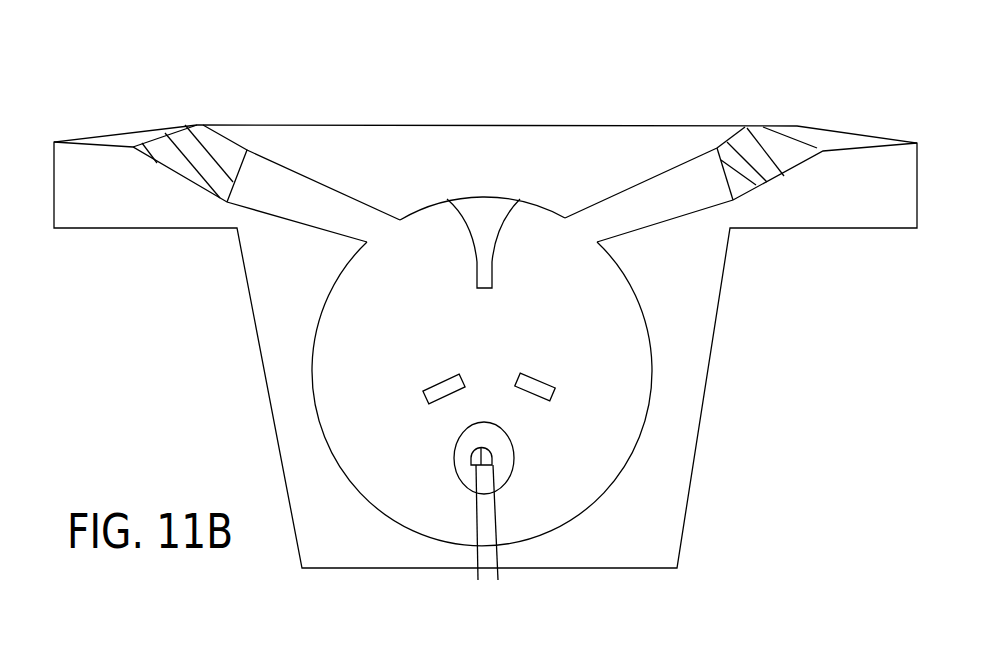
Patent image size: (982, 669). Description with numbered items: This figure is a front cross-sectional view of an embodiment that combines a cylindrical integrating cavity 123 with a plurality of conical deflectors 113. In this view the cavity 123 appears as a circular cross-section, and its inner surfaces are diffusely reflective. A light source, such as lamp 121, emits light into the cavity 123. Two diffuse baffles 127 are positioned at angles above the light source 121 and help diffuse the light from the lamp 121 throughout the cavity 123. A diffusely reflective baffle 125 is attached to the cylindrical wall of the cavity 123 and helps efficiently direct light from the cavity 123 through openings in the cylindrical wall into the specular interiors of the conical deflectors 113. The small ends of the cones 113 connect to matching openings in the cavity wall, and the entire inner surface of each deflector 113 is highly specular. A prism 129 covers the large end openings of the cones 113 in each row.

The conical deflector 113 is at (265, 213).
The lamp 121 is at (525, 472).
The cylindrical integrating cavity 123 is at (637, 447).
The diffusely reflective baffle 125 is at (495, 197).
The diffuse baffle 127 is at (557, 388).
The prism 129 is at (745, 127).